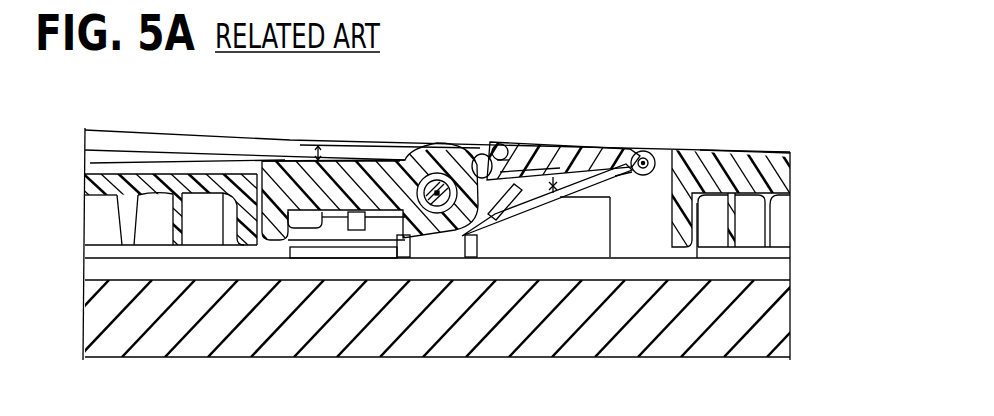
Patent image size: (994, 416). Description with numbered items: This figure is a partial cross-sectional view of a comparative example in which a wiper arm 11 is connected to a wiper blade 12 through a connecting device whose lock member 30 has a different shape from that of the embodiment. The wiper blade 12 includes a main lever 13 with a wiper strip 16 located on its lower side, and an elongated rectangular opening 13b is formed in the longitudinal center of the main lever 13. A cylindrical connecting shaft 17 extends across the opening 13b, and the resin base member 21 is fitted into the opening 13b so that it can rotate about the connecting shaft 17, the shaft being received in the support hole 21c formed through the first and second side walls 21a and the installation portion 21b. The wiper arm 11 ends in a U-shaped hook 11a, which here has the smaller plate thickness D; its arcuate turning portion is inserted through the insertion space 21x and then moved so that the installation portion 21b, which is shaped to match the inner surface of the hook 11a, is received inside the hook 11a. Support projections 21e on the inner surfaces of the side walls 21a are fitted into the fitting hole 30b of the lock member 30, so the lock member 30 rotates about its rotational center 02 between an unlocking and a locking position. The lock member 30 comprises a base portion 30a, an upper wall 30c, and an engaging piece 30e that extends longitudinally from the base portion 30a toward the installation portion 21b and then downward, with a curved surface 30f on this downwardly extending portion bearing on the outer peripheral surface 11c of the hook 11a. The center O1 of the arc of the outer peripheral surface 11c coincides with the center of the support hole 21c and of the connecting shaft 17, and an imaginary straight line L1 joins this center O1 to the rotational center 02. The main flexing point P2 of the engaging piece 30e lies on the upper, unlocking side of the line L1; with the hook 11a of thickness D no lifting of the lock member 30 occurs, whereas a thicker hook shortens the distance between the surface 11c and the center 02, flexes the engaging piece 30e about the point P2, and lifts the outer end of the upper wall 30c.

The wiper arm 11 is at (127, 132).
The hook 11a is at (500, 144).
The outer peripheral surface 11c is at (477, 158).
The wiper blade 12 is at (436, 244).
The main lever 13 is at (773, 152).
The opening 13b is at (250, 158).
The wiper strip 16 is at (612, 358).
The connecting shaft 17 is at (436, 186).
The base member 21 is at (452, 148).
The first and second side walls 21a is at (567, 198).
The installation portion 21b is at (368, 161).
The support hole 21c is at (425, 222).
The support projections 21e is at (624, 180).
The insertion space 21x is at (517, 213).
The lock member 30 is at (612, 152).
The base portion 30a is at (580, 160).
The fitting hole 30b is at (660, 153).
The upper wall 30c is at (545, 150).
The engaging piece 30e is at (473, 222).
The curved surface 30f is at (468, 225).
The center of the arc O1 is at (436, 189).
The rotational center of the lock member 02 is at (645, 200).
The main flexing point P2 is at (503, 160).
The imaginary straight line L1 is at (760, 148).
The plate thickness D is at (316, 142).